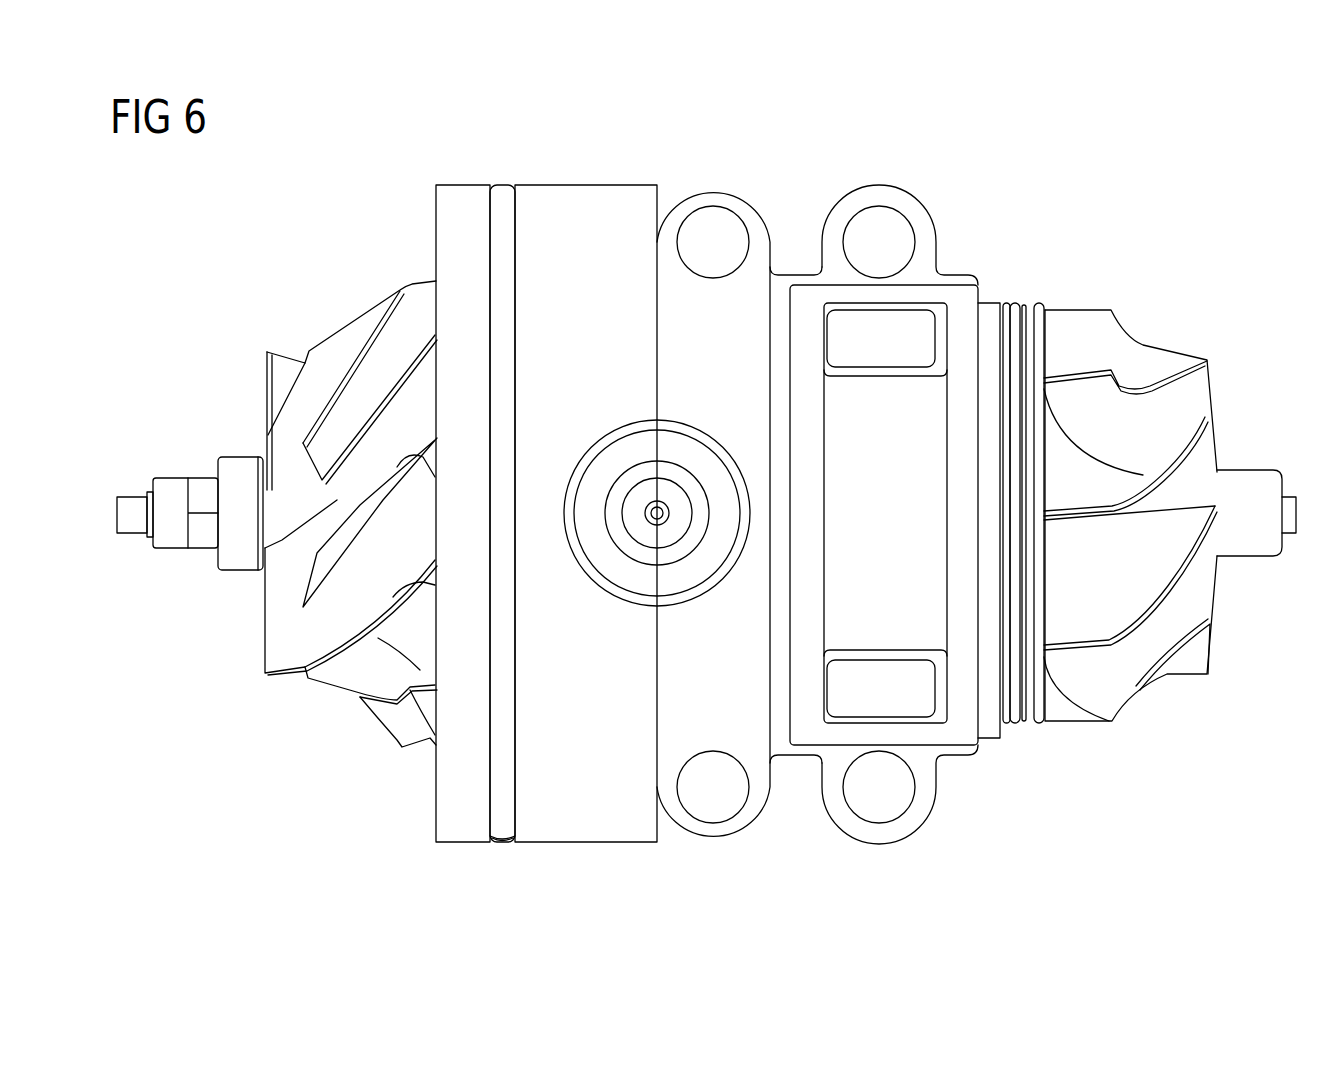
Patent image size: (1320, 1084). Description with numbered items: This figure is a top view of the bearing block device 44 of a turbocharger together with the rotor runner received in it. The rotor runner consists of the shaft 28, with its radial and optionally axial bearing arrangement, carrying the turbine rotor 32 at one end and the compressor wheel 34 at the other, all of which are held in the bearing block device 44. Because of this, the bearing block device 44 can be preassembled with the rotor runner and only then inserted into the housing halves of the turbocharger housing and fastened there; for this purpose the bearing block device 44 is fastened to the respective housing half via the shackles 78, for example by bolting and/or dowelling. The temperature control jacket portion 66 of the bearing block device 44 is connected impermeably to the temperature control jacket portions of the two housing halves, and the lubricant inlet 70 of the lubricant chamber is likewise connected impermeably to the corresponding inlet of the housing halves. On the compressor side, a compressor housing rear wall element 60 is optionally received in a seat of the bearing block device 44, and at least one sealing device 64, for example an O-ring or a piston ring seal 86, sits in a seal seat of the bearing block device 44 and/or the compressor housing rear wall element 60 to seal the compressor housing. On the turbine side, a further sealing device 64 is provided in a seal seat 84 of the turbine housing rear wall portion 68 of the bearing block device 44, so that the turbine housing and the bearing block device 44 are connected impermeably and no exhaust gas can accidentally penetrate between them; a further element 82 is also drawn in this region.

The shaft 28 is at (143, 497).
The turbine rotor 32 is at (1138, 360).
The compressor wheel 34 is at (340, 372).
The bearing block device 44 is at (587, 178).
The compressor housing rear wall element 60 is at (458, 198).
The sealing device 64 is at (503, 178).
The temperature control jacket portion 66 is at (885, 343).
The turbine housing rear wall portion 68 is at (996, 293).
The lubricant inlet 70 is at (646, 525).
The shackles 78 is at (848, 207).
The plate 82 is at (981, 283).
The seal seat 84 is at (1038, 305).
The piston ring seal 86 is at (502, 840).